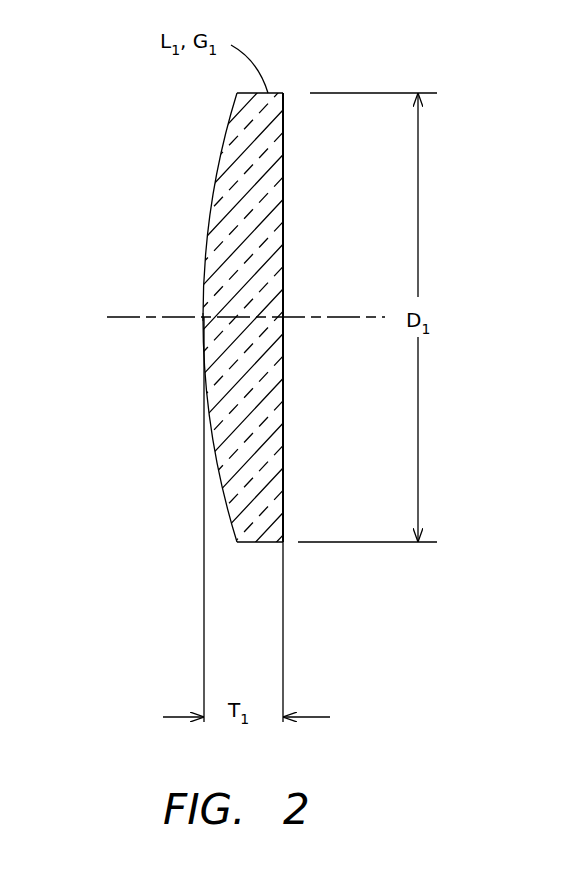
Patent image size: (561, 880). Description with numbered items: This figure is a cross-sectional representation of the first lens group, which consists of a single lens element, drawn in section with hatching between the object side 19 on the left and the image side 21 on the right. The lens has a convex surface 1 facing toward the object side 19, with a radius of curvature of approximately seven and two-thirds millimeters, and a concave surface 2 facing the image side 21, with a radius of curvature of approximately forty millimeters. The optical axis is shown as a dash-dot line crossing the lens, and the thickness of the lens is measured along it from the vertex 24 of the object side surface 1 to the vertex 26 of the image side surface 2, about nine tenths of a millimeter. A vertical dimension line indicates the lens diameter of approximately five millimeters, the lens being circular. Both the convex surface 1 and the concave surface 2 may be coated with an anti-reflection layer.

The convex surface 1 is at (217, 172).
The concave surface 2 is at (285, 198).
The object side 19 is at (71, 231).
The image side 21 is at (495, 231).
The vertex of the object side surface 24 is at (204, 318).
The vertex of the image side surface 26 is at (284, 316).